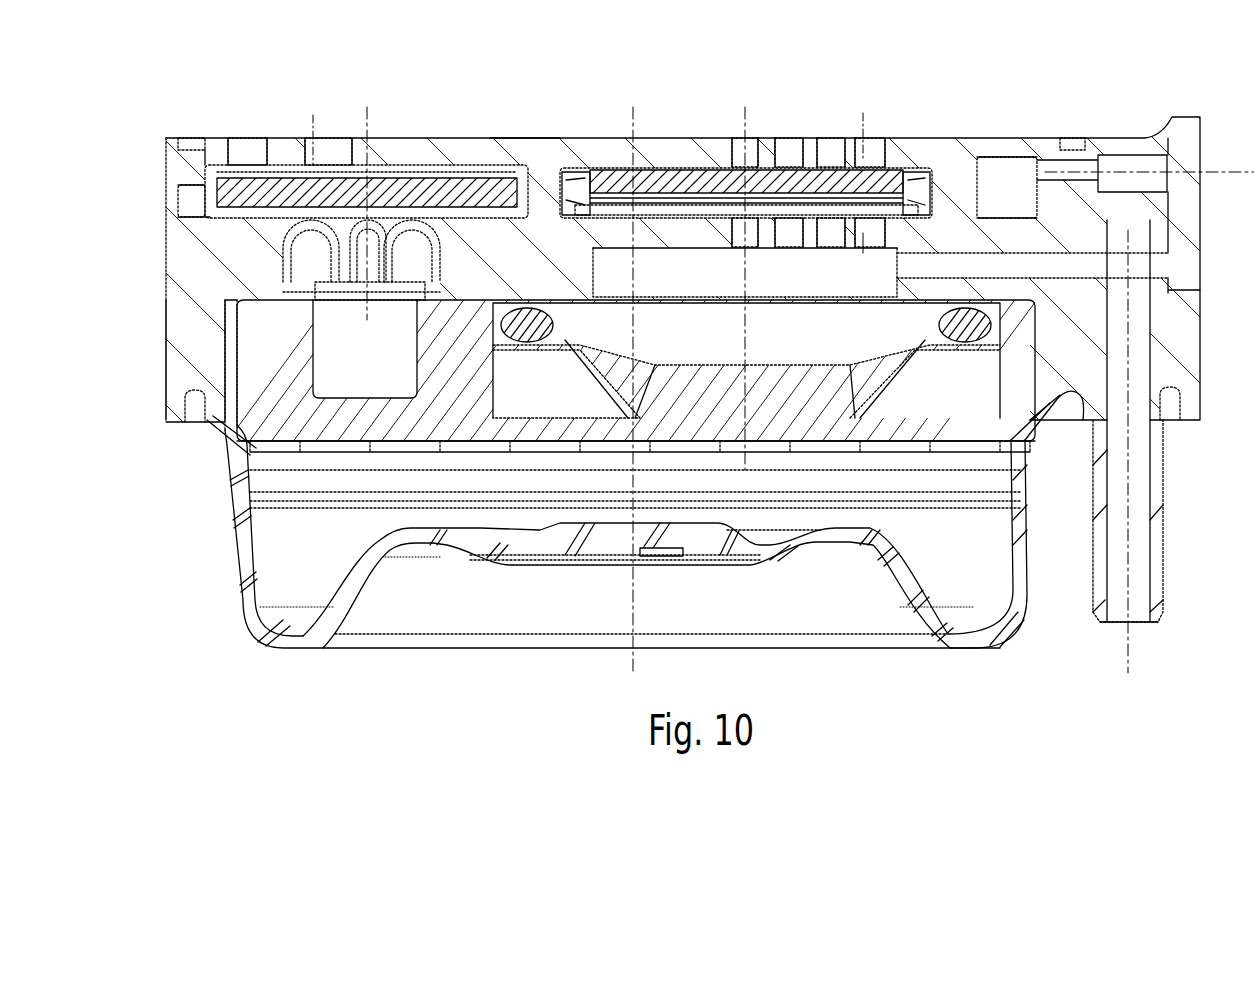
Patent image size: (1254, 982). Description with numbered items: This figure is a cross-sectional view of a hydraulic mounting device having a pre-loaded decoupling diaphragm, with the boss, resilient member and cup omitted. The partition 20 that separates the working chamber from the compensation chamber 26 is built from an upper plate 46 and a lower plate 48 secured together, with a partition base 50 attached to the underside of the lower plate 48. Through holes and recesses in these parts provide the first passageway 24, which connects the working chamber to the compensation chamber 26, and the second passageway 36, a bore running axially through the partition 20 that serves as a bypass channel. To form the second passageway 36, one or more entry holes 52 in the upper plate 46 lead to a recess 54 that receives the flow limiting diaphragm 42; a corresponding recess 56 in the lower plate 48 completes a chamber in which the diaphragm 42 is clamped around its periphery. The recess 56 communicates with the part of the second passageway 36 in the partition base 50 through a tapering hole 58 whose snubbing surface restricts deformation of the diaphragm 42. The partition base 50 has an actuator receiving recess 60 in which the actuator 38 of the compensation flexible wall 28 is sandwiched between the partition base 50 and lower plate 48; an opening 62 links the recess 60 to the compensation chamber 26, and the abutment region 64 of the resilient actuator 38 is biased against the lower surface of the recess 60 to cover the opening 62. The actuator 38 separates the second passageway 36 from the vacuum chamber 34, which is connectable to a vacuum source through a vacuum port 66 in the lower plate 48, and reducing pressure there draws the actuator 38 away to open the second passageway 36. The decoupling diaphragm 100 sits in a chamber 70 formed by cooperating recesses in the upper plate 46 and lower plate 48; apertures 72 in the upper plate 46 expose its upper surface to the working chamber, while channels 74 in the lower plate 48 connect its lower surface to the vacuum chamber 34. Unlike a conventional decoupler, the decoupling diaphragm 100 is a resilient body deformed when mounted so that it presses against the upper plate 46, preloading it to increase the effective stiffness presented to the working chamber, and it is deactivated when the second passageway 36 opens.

The partition 20 is at (972, 138).
The first passageway 24 is at (1130, 160).
The compensation chamber 26 is at (937, 553).
The compensation flexible wall 28 is at (985, 642).
The vacuum chamber 34 is at (767, 330).
The second passageway 36 is at (532, 392).
The actuator 38 is at (870, 355).
The flow limiting diaphragm 42 is at (437, 185).
The upper plate 46 is at (507, 148).
The lower plate 48 is at (193, 334).
The partition base 50 is at (257, 423).
The entry holes 52 is at (283, 148).
The recess 54 is at (213, 165).
The recess 56 is at (205, 210).
The tapering hole 58 is at (300, 240).
The actuator receiving recess 60 is at (1000, 405).
The opening 62 is at (708, 433).
The abutment region 64 is at (785, 400).
The vacuum port 66 is at (1135, 550).
The chamber 70 is at (590, 170).
The apertures 72 is at (832, 148).
The channels 74 is at (832, 235).
The decoupling diaphragm 100 is at (662, 175).